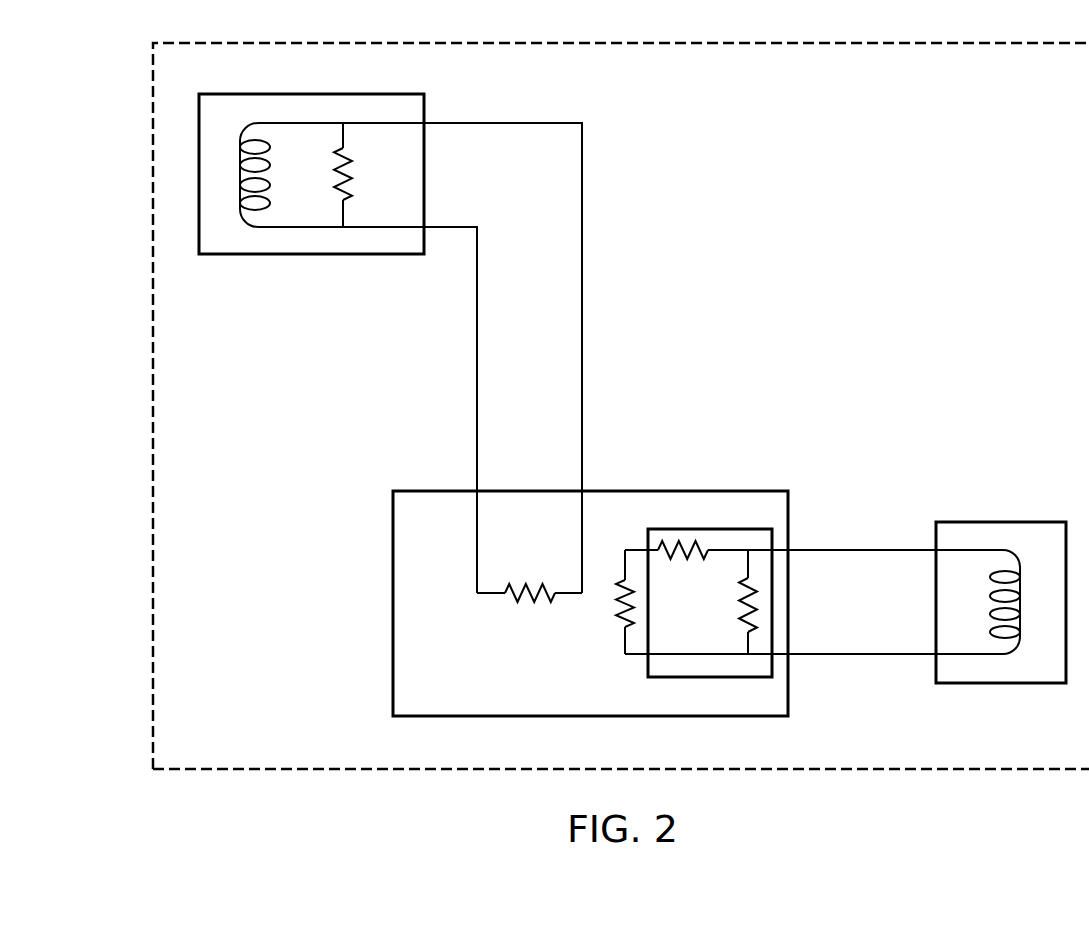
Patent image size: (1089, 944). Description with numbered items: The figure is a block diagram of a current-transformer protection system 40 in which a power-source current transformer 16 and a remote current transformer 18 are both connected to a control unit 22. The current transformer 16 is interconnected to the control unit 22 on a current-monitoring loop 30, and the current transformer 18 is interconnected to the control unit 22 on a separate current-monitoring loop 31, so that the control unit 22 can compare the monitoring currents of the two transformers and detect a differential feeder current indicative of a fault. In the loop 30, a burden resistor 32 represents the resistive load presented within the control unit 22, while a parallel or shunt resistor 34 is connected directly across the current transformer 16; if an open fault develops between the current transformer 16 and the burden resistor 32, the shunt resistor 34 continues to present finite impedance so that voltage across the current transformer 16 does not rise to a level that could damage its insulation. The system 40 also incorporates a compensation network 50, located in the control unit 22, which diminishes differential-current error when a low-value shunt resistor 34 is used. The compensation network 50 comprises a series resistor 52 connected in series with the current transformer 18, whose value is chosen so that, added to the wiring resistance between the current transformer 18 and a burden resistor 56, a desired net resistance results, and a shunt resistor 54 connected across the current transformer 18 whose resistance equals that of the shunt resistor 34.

The power-source current transformer 16 is at (311, 204).
The remote current transformer 18 is at (1000, 521).
The control unit 22 is at (581, 585).
The current-monitoring loop 30 is at (479, 352).
The current-monitoring loop 31 is at (888, 550).
The burden resistor 32 is at (515, 600).
The shunt resistor 34 is at (355, 172).
The current-transformer protection system 40 is at (150, 449).
The compensation network 50 is at (737, 565).
The series resistor 52 is at (678, 546).
The shunt resistor 54 is at (755, 600).
The burden resistor 56 is at (620, 623).